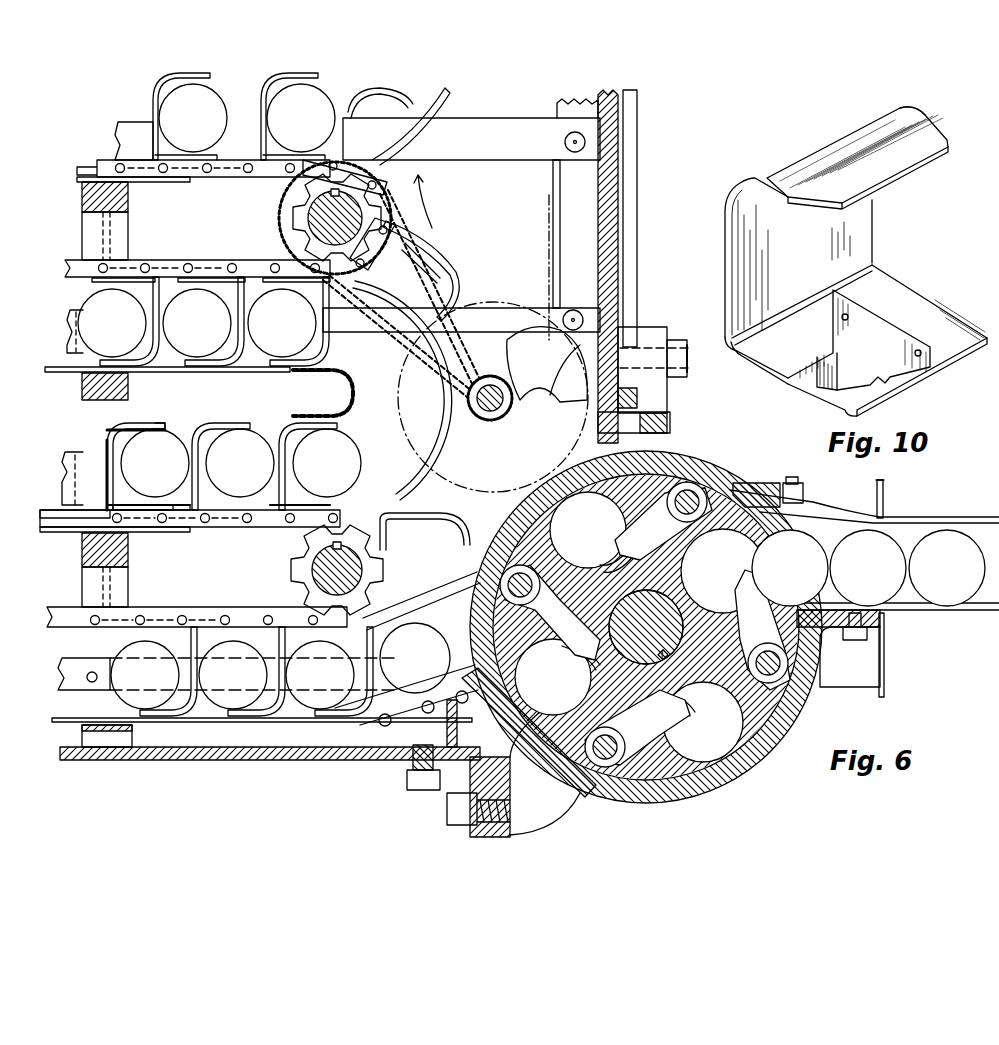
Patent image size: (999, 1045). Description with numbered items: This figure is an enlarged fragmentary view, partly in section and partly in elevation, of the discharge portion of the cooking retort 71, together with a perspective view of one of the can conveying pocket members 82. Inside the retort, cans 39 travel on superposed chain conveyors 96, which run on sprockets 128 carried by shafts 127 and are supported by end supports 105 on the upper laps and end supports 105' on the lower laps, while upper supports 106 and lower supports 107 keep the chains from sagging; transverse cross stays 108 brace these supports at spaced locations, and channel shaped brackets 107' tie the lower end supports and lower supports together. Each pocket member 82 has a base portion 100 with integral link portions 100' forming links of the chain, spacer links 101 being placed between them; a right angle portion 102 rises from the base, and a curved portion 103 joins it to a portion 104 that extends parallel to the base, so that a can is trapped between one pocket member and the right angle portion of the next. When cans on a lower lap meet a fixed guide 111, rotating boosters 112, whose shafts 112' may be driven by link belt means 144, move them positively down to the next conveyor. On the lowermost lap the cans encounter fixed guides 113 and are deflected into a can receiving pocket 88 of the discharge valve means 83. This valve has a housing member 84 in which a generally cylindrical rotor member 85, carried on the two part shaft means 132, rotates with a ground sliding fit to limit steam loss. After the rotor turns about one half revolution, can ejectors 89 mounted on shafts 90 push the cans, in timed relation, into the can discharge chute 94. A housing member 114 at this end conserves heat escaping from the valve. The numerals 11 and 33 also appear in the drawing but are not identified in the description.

In FIG. 6, the mounting plate 11 is at (548, 232).
In FIG. 6, the support post 33 is at (657, 125).
In FIG. 6, the can 39 is at (318, 110).
In FIG. 6, the cooking retort 71 is at (543, 187).
In FIG. 6, the pocket member 82 is at (452, 247).
In FIG. 10, the pocket member 82 is at (750, 167).
In FIG. 6, the discharge valve means 83 is at (705, 423).
In FIG. 6, the housing member 84 is at (730, 780).
In FIG. 6, the rotor member 85 is at (713, 523).
In FIG. 6, the can receiving pocket 88 is at (645, 510).
In FIG. 6, the can ejector 89 is at (615, 560).
In FIG. 6, the shaft 90 is at (690, 500).
In FIG. 6, the can discharge chute 94 is at (985, 608).
In FIG. 6, the conveyor 96 is at (217, 190).
In FIG. 6, the base portion 100 is at (151, 491).
In FIG. 10, the base portion 100 is at (889, 340).
In FIG. 6, the link portion 100' is at (129, 534).
In FIG. 10, the link portion 100' is at (805, 378).
In FIG. 6, the spacer link 101 is at (63, 492).
In FIG. 6, the right angle portion 102 is at (106, 470).
In FIG. 10, the right angle portion 102 is at (860, 233).
In FIG. 6, the curved portion 103 is at (115, 428).
In FIG. 10, the curved portion 103 is at (840, 150).
In FIG. 6, the parallel portion 104 is at (160, 430).
In FIG. 10, the parallel portion 104 is at (935, 140).
In FIG. 6, the end support 105 is at (96, 313).
In FIG. 6, the end support 105' is at (201, 500).
In FIG. 6, the upper support 106 is at (78, 530).
In FIG. 6, the lower support 107 is at (245, 566).
In FIG. 6, the channel shaped bracket 107' is at (240, 544).
In FIG. 6, the transverse cross stay 108 is at (82, 213).
In FIG. 6, the fixed guide 111 is at (452, 97).
In FIG. 6, the rotating booster 112 is at (547, 343).
In FIG. 6, the shaft 112' is at (455, 341).
In FIG. 6, the fixed guide 113 is at (423, 593).
In FIG. 6, the housing member 114 is at (885, 495).
In FIG. 6, the shaft 127 is at (313, 212).
In FIG. 6, the sprocket 128 is at (292, 228).
In FIG. 6, the shaft means 132 is at (590, 657).
In FIG. 6, the link belt means 144 is at (430, 270).